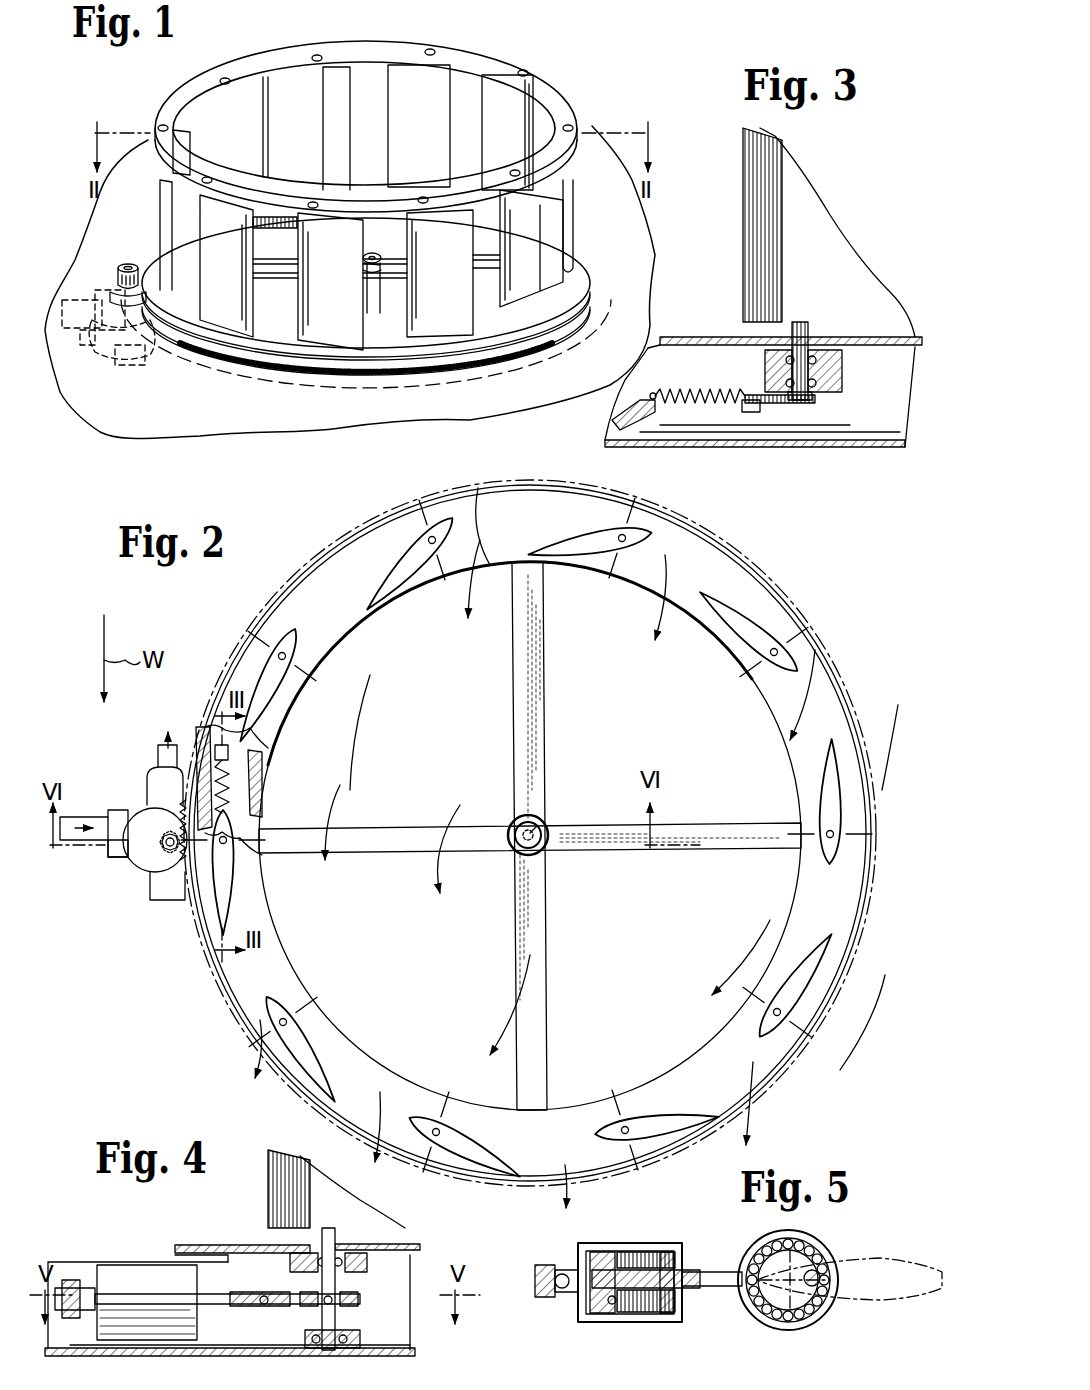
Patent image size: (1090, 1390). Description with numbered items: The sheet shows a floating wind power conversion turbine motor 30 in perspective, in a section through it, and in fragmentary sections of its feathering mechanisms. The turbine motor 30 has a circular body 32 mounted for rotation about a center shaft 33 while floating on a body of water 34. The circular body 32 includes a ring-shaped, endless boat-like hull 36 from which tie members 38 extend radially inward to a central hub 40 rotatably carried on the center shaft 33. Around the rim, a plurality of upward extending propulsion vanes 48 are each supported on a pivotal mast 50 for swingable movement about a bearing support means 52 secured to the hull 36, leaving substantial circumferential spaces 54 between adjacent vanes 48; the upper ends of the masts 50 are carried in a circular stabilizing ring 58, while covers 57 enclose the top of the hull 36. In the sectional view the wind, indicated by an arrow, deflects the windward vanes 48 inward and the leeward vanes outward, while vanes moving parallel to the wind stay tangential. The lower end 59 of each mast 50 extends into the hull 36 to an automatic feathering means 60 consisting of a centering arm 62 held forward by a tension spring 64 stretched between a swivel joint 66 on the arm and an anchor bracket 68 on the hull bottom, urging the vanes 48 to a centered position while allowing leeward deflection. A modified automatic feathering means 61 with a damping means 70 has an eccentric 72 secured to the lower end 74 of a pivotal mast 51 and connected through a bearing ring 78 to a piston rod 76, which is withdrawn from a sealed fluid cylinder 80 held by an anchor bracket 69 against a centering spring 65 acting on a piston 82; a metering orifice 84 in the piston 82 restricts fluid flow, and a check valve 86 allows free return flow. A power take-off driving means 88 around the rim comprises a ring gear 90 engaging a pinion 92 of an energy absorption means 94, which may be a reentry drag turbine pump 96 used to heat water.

In FIG. 1, the wind power conversion turbine motor 30 is at (350, 214).
In FIG. 1, the circular body 32 is at (578, 280).
In FIG. 1, the center shaft 33 is at (383, 256).
In FIG. 2, the center shaft 33 is at (545, 825).
In FIG. 1, the body of water 34 is at (200, 405).
In FIG. 1, the boat-like hull 36 is at (445, 380).
In FIG. 3, the boat-like hull 36 is at (690, 452).
In FIG. 4, the boat-like hull 36 is at (260, 1262).
In FIG. 1, the tie members 38 is at (295, 275).
In FIG. 2, the tie members 38 is at (543, 722).
In FIG. 1, the central hub 40 is at (390, 270).
In FIG. 2, the central hub 40 is at (508, 822).
In FIG. 1, the propulsion vanes 48 is at (220, 100).
In FIG. 3, the propulsion vanes 48 is at (830, 260).
In FIG. 2, the propulsion vanes 48 is at (590, 550).
In FIG. 4, the propulsion vanes 48 is at (270, 1185).
In FIG. 5, the propulsion vanes 48 is at (870, 1260).
In FIG. 1, the pivotal mast 50 is at (316, 56).
In FIG. 3, the pivotal mast 50 is at (810, 338).
In FIG. 2, the pivotal mast 50 is at (434, 546).
In FIG. 4, the pivotal mast 51 is at (332, 1240).
In FIG. 3, the bearing support means 52 is at (842, 372).
In FIG. 4, the bearing support means 52 is at (368, 1258).
In FIG. 2, the circumferential spaces 54 is at (785, 1100).
In FIG. 3, the covers 57 is at (698, 338).
In FIG. 2, the covers 57 is at (570, 527).
In FIG. 4, the covers 57 is at (205, 1245).
In FIG. 1, the circular stabilizing ring 58 is at (168, 108).
In FIG. 3, the lower end of pivotal mast 59 is at (816, 398).
In FIG. 3, the automatic feathering means 60 is at (790, 432).
In FIG. 2, the automatic feathering means 60 is at (235, 805).
In FIG. 4, the modified automatic feathering means 61 is at (252, 1318).
In FIG. 3, the centering arm 62 is at (765, 396).
In FIG. 3, the tension spring 64 is at (705, 405).
In FIG. 5, the centering spring 65 is at (668, 1252).
In FIG. 3, the swivel joint 66 is at (752, 412).
In FIG. 3, the anchor bracket 68 is at (652, 412).
In FIG. 4, the anchor bracket 69 is at (65, 1285).
In FIG. 5, the anchor bracket 69 is at (560, 1270).
In FIG. 4, the damping means 70 is at (147, 1278).
In FIG. 5, the damping means 70 is at (642, 1271).
In FIG. 4, the eccentric 72 is at (295, 1295).
In FIG. 5, the eccentric 72 is at (775, 1308).
In FIG. 4, the lower end of pivotal mast 74 is at (340, 1326).
In FIG. 5, the lower end of pivotal mast 74 is at (815, 1288).
In FIG. 4, the piston rod 76 is at (218, 1300).
In FIG. 5, the piston rod 76 is at (710, 1272).
In FIG. 4, the bearing ring 78 is at (362, 1298).
In FIG. 5, the bearing ring 78 is at (801, 1284).
In FIG. 4, the sealed fluid cylinder 80 is at (160, 1302).
In FIG. 5, the sealed fluid cylinder 80 is at (648, 1318).
In FIG. 5, the piston 82 is at (622, 1254).
In FIG. 5, the metering orifice 84 is at (605, 1256).
In FIG. 5, the check valve 86 is at (612, 1305).
In FIG. 1, the power take-off driving means 88 is at (132, 262).
In FIG. 2, the power take-off driving means 88 is at (170, 828).
In FIG. 1, the ring gear 90 is at (232, 355).
In FIG. 2, the ring gear 90 is at (186, 860).
In FIG. 2, the pinion 92 is at (168, 852).
In FIG. 1, the energy absorption means 94 is at (118, 330).
In FIG. 2, the energy absorption means 94 is at (130, 845).
In FIG. 2, the reentry drag turbine pump 96 is at (118, 810).